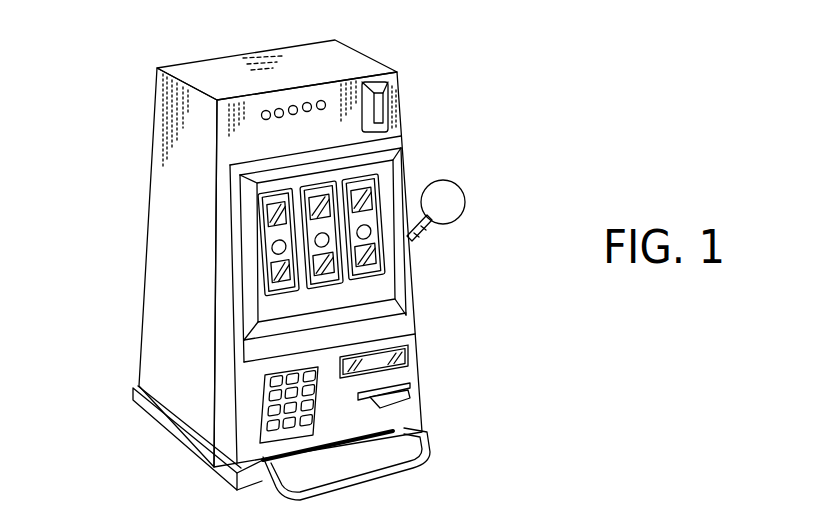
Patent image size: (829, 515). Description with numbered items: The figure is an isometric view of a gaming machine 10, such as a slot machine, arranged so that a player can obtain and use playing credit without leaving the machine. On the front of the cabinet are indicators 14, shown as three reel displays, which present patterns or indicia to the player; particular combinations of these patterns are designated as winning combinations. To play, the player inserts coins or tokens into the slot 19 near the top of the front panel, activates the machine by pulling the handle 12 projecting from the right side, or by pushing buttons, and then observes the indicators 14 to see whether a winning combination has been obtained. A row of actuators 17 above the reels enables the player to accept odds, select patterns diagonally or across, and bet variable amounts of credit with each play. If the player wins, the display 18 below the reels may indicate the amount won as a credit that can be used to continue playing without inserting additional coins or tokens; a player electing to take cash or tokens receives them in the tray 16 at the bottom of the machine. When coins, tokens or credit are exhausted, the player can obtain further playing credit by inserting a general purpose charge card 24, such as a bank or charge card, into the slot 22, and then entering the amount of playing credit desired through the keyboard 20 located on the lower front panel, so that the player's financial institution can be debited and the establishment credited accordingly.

The gaming machine 10 is at (120, 127).
The handle 12 is at (443, 203).
The indicators 14 is at (368, 200).
The tray 16 is at (280, 477).
The actuators 17 is at (321, 100).
The display 18 is at (402, 363).
The slot 19 is at (387, 115).
The keyboard 20 is at (265, 415).
The slot 22 is at (393, 390).
The general purpose charge card 24 is at (395, 407).